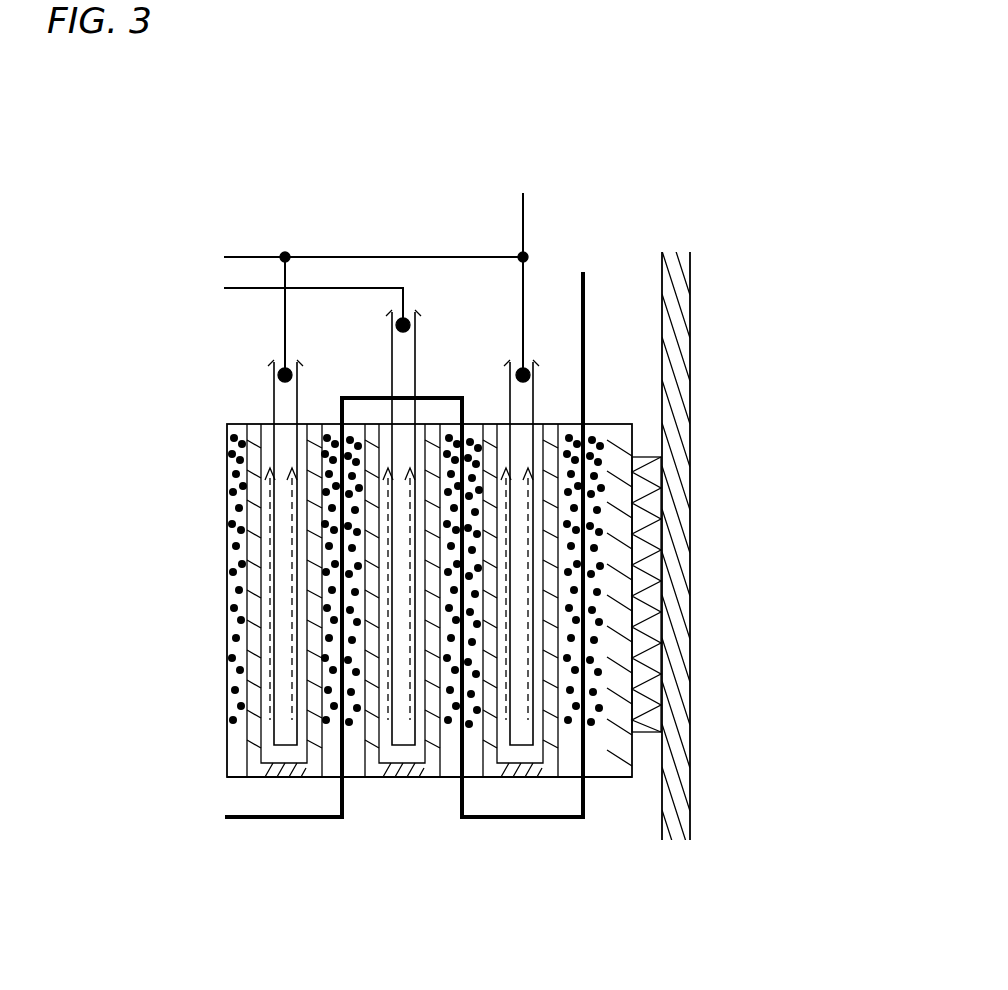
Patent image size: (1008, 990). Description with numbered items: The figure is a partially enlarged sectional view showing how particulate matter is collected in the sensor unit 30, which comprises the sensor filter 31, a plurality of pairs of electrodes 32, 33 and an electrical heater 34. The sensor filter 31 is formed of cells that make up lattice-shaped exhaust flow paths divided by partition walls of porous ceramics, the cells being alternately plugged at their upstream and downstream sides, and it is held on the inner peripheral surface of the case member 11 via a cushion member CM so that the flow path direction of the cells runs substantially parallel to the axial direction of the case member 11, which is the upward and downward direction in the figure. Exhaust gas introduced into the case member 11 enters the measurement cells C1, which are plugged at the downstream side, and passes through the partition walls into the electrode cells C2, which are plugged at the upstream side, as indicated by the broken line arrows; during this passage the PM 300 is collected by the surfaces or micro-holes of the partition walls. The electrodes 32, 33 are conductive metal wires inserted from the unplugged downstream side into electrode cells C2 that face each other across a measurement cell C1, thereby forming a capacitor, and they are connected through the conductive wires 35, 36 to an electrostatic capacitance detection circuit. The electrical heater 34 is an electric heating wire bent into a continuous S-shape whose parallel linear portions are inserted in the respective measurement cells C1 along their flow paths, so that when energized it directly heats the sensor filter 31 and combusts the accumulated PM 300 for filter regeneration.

The sensor unit 30 is at (441, 216).
The conductive wire 36 is at (250, 257).
The conductive wire 35 is at (250, 289).
The measurement cell C1 is at (402, 424).
The electrode cell C2 is at (263, 727).
The electrode 33 is at (287, 727).
The electrode 32 is at (407, 732).
The electrical heater 34 is at (278, 840).
The sensor filter 31 is at (488, 747).
The PM 300 is at (238, 446).
The cushion member CM is at (650, 590).
The case member 11 is at (674, 441).